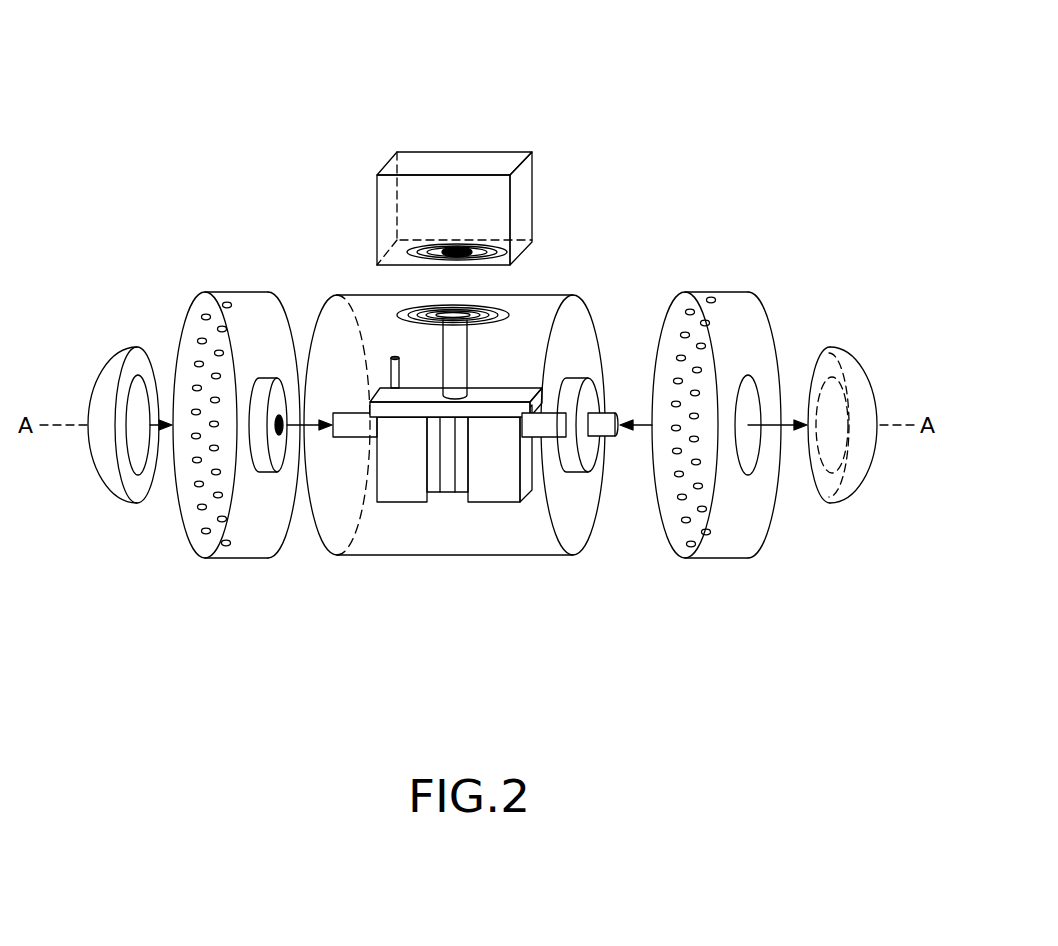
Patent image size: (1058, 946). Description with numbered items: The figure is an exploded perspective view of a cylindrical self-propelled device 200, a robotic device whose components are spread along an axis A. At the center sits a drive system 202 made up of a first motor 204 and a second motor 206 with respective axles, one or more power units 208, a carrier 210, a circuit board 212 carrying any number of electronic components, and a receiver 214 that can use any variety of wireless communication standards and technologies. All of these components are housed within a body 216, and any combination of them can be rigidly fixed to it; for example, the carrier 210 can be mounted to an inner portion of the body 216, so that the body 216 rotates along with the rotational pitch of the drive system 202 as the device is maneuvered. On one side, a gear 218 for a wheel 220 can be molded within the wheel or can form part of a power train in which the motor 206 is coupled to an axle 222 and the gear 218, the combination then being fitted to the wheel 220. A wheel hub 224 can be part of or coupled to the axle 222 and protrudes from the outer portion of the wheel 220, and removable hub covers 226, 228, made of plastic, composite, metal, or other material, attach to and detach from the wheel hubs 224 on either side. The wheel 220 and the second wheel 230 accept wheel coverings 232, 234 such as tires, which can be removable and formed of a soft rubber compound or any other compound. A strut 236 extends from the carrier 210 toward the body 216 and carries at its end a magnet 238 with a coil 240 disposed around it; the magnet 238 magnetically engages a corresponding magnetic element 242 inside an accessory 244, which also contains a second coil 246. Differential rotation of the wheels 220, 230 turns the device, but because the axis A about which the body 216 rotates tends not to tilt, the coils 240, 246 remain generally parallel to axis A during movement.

The self-propelled device 200 is at (203, 76).
The drive system 202 is at (474, 459).
The first motor 204 is at (398, 505).
The second motor 206 is at (482, 505).
The power unit 208 is at (437, 493).
The carrier 210 is at (494, 416).
The circuit board 212 is at (386, 396).
The receiver 214 is at (372, 345).
The body 216 is at (563, 295).
The gear 218 is at (588, 484).
The wheel 220 is at (735, 395).
The axle 222 is at (541, 440).
The wheel hub 224 is at (626, 456).
The hub cover 226 is at (851, 490).
The hub cover 228 is at (107, 478).
The wheel 230 is at (219, 401).
The wheel covering 232 is at (695, 294).
The wheel covering 234 is at (190, 302).
The strut 236 is at (462, 360).
The magnet 238 is at (462, 310).
The coil 240 is at (405, 288).
The magnetic element 242 is at (462, 246).
The accessory 244 is at (450, 207).
The second coil 246 is at (383, 256).